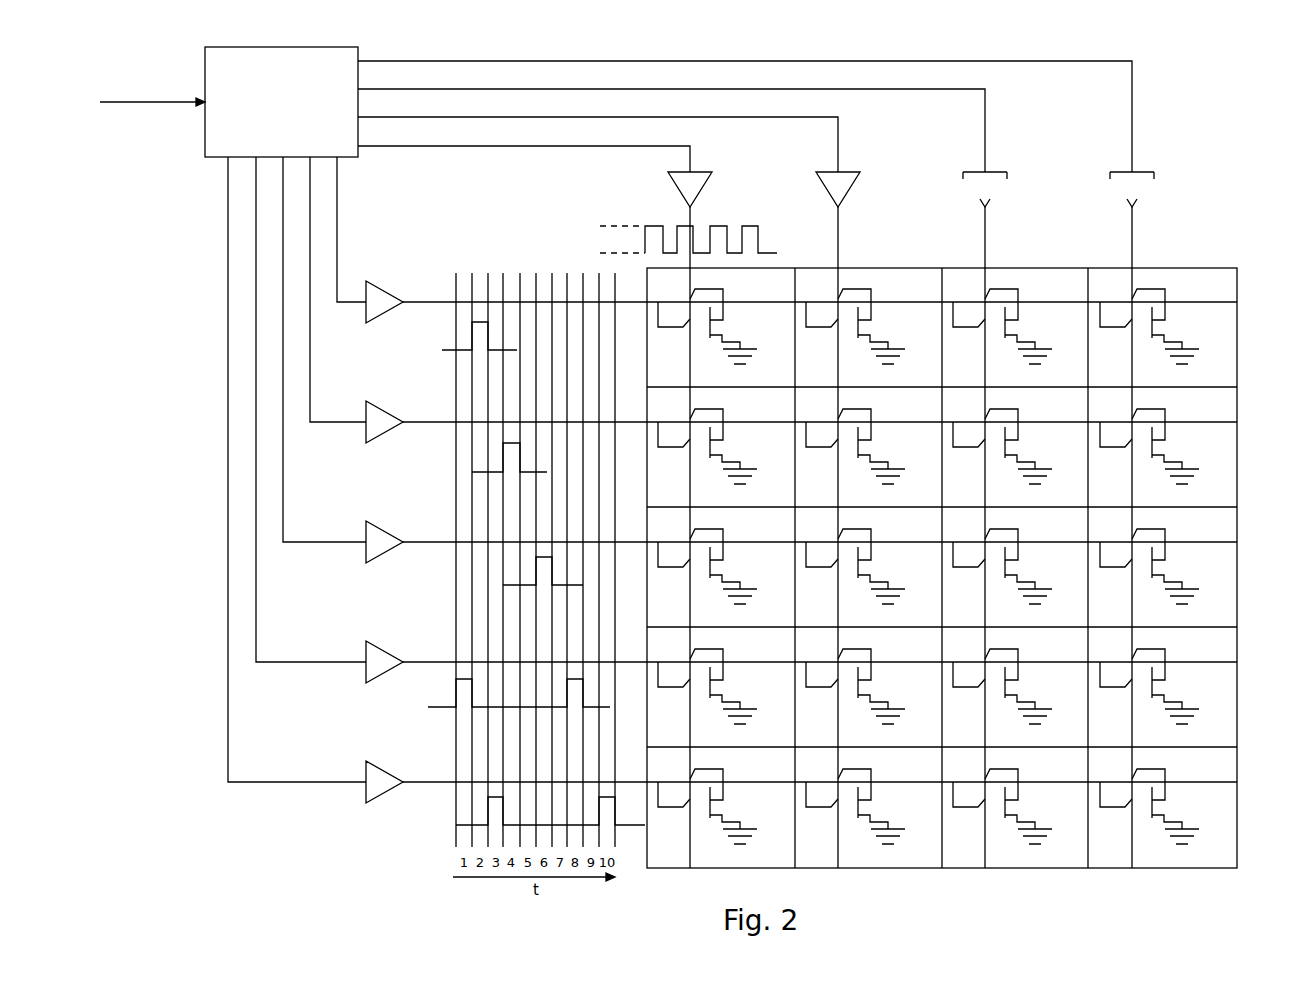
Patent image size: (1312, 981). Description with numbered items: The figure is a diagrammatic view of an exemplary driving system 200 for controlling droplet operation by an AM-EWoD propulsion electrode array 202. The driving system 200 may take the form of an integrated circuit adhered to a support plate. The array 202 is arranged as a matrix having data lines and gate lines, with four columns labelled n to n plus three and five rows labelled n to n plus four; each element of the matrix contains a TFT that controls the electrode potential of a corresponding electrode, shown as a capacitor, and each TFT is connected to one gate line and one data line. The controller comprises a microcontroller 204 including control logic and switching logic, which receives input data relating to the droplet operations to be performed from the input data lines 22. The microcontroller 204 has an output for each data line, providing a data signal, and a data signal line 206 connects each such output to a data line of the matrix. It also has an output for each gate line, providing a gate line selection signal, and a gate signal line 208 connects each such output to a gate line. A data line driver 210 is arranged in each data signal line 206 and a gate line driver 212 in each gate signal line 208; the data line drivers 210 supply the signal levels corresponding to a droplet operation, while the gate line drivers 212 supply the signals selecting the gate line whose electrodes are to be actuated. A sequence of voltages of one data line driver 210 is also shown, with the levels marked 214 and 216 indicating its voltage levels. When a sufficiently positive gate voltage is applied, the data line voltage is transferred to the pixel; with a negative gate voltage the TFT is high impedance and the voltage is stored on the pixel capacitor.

The input data lines 22 is at (156, 101).
The driving system 200 is at (302, 42).
The AM-EWoD propulsion electrode array 202 is at (1237, 268).
The microcontroller 204 is at (205, 157).
The data signal line 206 is at (398, 61).
The gate signal line 208 is at (228, 345).
The data line driver 210 is at (668, 190).
The gate line driver 212 is at (380, 290).
The high voltage level 214 is at (600, 226).
The low voltage level 216 is at (600, 253).